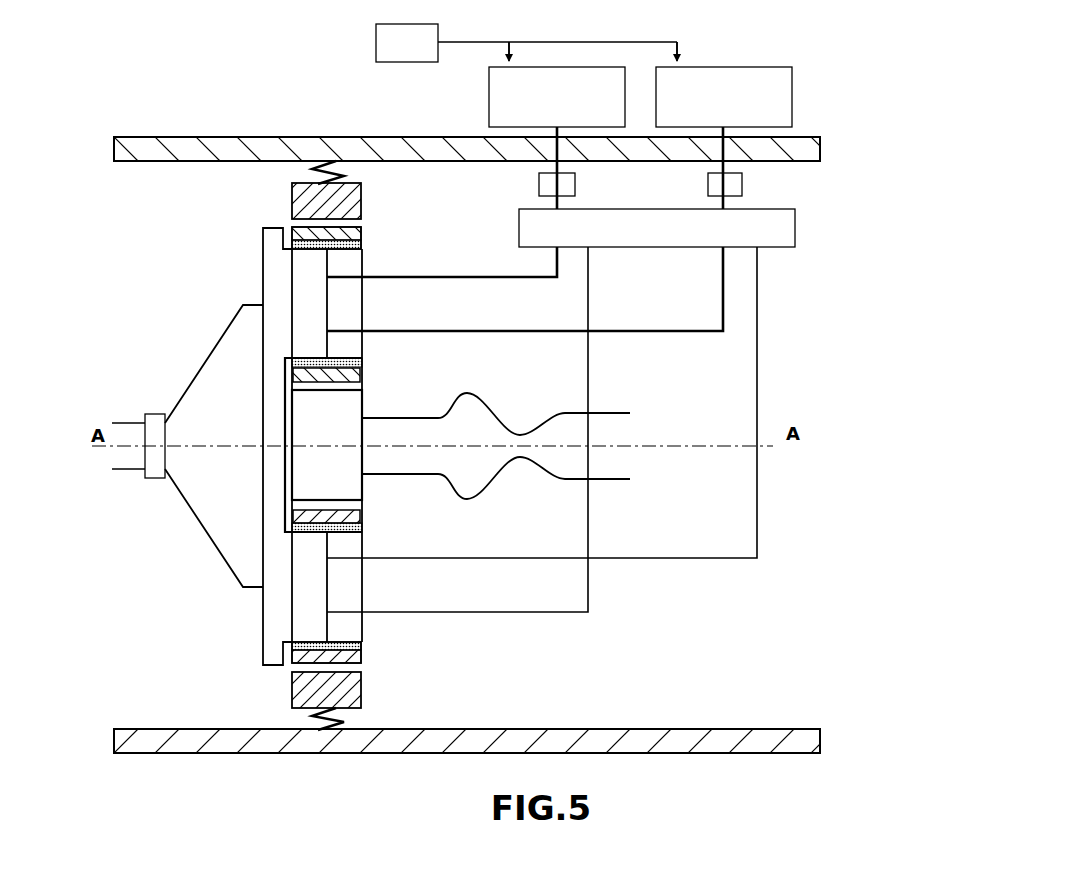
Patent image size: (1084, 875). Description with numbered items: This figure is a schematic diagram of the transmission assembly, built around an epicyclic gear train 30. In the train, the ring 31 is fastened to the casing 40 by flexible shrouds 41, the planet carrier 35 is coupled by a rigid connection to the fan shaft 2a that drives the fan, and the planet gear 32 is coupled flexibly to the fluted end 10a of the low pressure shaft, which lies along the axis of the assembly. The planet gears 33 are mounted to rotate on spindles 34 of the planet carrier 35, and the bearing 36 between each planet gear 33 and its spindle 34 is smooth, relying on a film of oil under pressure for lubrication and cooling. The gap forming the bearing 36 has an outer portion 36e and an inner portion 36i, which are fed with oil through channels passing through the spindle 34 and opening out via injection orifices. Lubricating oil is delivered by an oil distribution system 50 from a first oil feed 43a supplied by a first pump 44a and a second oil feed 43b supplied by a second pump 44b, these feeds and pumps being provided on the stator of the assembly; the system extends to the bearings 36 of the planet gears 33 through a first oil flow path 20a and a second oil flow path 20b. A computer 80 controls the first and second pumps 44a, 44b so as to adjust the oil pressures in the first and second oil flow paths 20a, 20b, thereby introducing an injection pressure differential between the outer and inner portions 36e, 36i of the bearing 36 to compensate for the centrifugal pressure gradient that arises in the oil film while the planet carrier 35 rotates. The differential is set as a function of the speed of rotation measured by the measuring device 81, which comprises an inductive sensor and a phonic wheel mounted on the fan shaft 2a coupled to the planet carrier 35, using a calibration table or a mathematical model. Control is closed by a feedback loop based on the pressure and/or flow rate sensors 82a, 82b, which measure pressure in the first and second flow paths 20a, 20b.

The fan shaft 2a is at (117, 423).
The fluted end of the low pressure shaft 10a is at (419, 418).
The first oil flow path 20a is at (472, 277).
The second oil flow path 20b is at (656, 330).
The epicyclic gear train 30 is at (199, 330).
The ring 31 is at (352, 208).
The planet gear 32 is at (358, 462).
The planet gears 33 is at (360, 376).
The spindle 34 is at (358, 305).
The planet carrier 35 is at (273, 260).
The bearing 36 is at (362, 505).
The outer portion of the gap 36e is at (355, 244).
The inner portion of the gap 36i is at (362, 362).
The casing 40 is at (200, 150).
The flexible shrouds 41 is at (344, 169).
The first oil feed 43a is at (584, 64).
The second oil feed 43b is at (751, 64).
The first pump 44a is at (557, 97).
The second pump 44b is at (724, 97).
The oil distribution system 50 is at (657, 228).
The computer 80 is at (526, 43).
The device for measuring the speed of rotation 81 is at (155, 414).
The pressure and/or flow rate sensor 82a is at (539, 189).
The pressure and/or flow rate sensor 82b is at (708, 189).